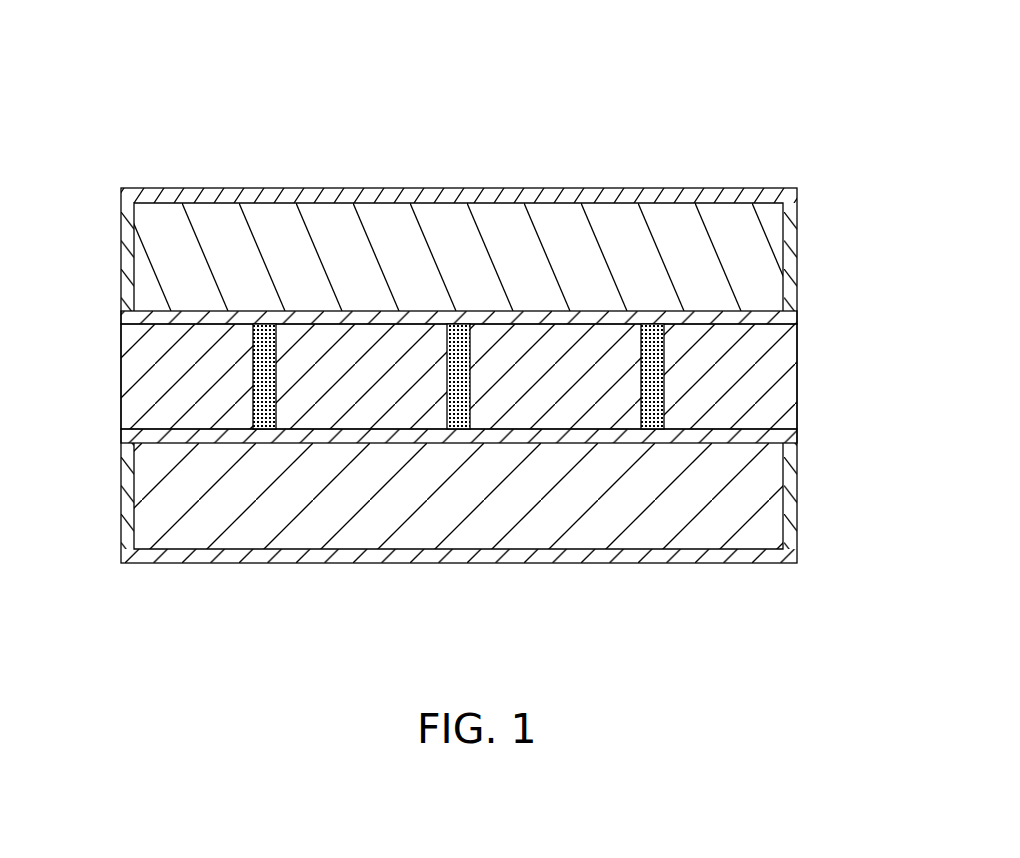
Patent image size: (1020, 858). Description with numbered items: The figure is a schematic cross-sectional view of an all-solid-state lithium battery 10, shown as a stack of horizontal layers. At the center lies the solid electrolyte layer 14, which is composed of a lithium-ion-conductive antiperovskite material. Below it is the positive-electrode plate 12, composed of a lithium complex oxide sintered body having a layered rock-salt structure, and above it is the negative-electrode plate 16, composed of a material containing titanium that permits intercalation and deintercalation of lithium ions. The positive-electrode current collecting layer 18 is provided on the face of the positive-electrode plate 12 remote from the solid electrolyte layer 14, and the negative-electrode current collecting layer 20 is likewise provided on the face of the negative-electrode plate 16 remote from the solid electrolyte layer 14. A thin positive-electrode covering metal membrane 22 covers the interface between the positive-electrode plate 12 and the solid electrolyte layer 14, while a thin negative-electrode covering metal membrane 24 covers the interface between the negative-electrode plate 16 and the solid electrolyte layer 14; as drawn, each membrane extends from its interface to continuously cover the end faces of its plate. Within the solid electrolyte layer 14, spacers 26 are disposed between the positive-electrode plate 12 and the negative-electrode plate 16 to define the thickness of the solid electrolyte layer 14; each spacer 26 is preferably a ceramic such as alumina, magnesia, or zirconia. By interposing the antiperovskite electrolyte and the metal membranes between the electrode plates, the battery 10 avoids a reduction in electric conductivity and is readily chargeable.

The all-solid-state lithium battery 10 is at (733, 47).
The positive-electrode plate 12 is at (738, 515).
The solid electrolyte layer 14 is at (748, 383).
The negative-electrode plate 16 is at (748, 263).
The positive-electrode current collecting layer 18 is at (752, 560).
The negative-electrode current collecting layer 20 is at (750, 193).
The positive-electrode covering metal membrane 22 is at (750, 433).
The negative-electrode covering metal membrane 24 is at (753, 322).
The spacers 26 is at (252, 381).